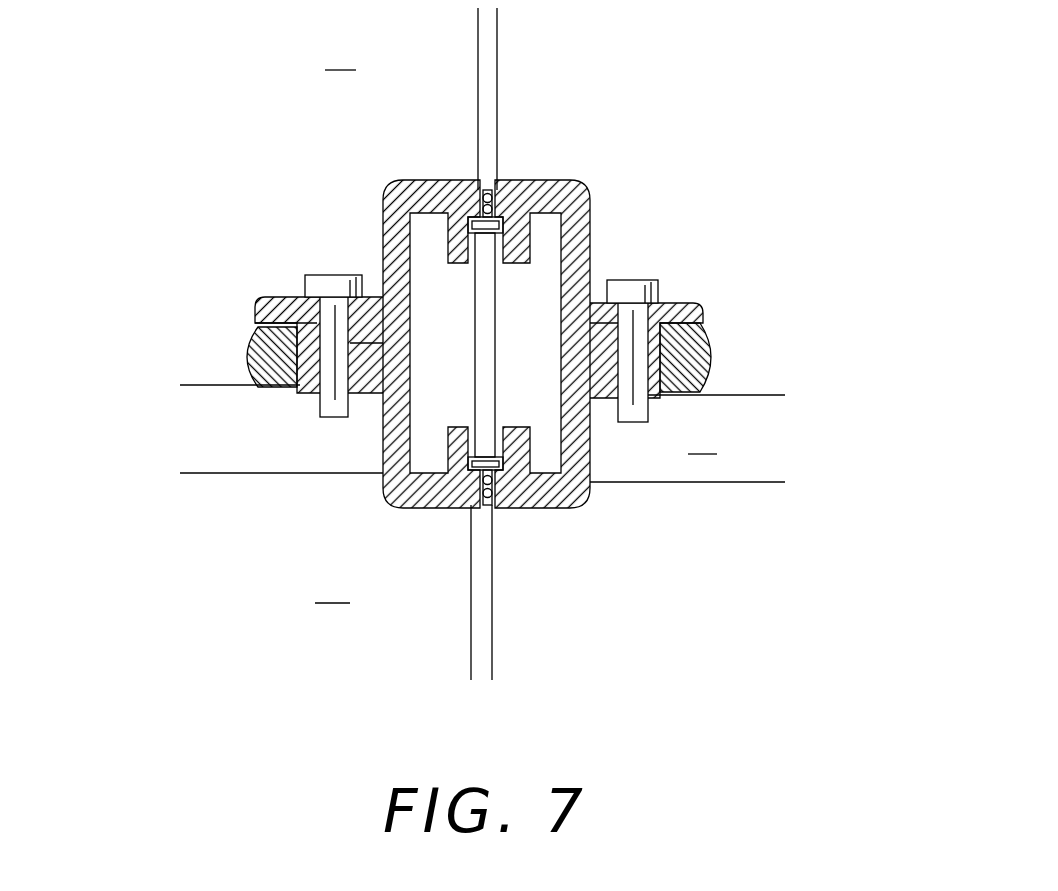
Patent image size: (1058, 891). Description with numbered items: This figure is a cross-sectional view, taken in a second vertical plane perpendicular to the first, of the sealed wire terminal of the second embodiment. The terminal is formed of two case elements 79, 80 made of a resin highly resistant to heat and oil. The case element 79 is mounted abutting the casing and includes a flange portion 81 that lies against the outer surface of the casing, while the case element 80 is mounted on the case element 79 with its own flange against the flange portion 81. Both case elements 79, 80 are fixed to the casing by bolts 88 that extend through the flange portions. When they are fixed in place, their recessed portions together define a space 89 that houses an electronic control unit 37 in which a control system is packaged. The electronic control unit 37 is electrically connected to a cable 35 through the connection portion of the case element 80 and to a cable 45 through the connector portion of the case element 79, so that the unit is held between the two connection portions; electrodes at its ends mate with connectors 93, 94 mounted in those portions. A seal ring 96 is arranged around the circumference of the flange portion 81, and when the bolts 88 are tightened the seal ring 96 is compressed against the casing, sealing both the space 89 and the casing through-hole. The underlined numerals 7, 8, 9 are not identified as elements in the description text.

The panel section 7 is at (340, 51).
The panel section 8 is at (281, 494).
The panel section 9 is at (687, 438).
The cable 35 is at (492, 63).
The cable 45 is at (492, 615).
The electronic control unit 37 is at (502, 285).
The case element 79 is at (573, 508).
The case element 80 is at (558, 182).
The flange portion 81 is at (310, 397).
The bolts 88 is at (333, 275).
The space 89 is at (547, 282).
The connector 93 is at (470, 270).
The connector 94 is at (503, 422).
The seal ring 96 is at (712, 360).